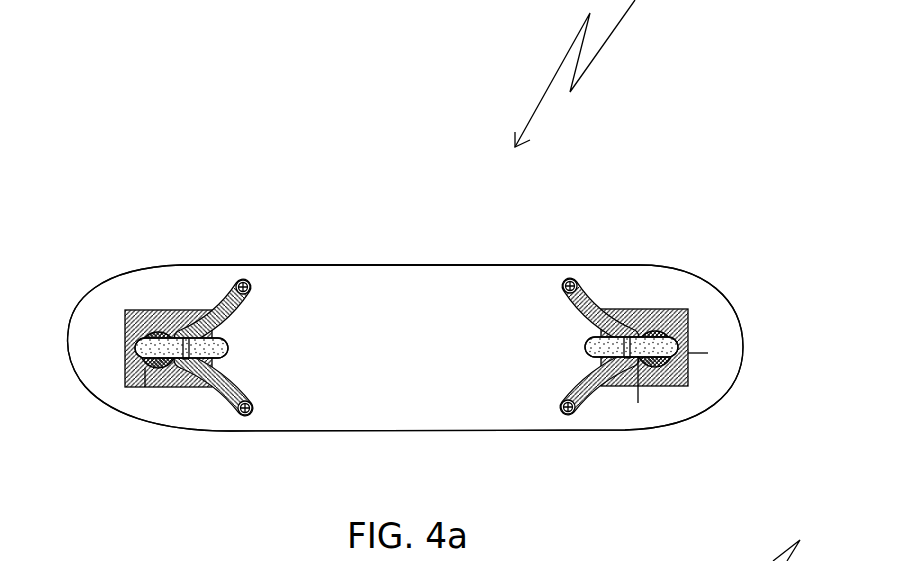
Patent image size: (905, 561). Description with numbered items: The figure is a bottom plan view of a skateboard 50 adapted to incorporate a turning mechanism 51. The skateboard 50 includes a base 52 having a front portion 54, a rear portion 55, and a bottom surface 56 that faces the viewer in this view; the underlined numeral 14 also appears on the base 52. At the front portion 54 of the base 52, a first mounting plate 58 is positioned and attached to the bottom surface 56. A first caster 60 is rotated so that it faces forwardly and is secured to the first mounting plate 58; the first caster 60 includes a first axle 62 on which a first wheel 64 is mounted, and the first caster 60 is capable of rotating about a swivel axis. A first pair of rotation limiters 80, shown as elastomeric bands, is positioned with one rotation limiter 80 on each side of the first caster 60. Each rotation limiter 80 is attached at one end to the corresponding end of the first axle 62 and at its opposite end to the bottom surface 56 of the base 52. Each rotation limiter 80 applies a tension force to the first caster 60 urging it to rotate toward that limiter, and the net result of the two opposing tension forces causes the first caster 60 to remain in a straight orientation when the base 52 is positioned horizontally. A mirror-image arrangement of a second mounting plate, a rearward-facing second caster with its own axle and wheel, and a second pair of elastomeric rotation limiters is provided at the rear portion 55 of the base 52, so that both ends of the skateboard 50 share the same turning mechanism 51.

The skateboard deck 14 is at (345, 209).
The skateboard 50 is at (822, 560).
The turning mechanism 51 is at (147, 290).
The base 52 is at (398, 266).
The front portion 54 is at (206, 350).
The rear portion 55 is at (632, 348).
The bottom surface 56 is at (415, 362).
The first mounting plate 58 is at (125, 364).
The first caster 60 is at (145, 387).
The first axle 62 is at (170, 357).
The first wheel 64 is at (228, 349).
The first pair of rotation limiters 80 is at (255, 294).